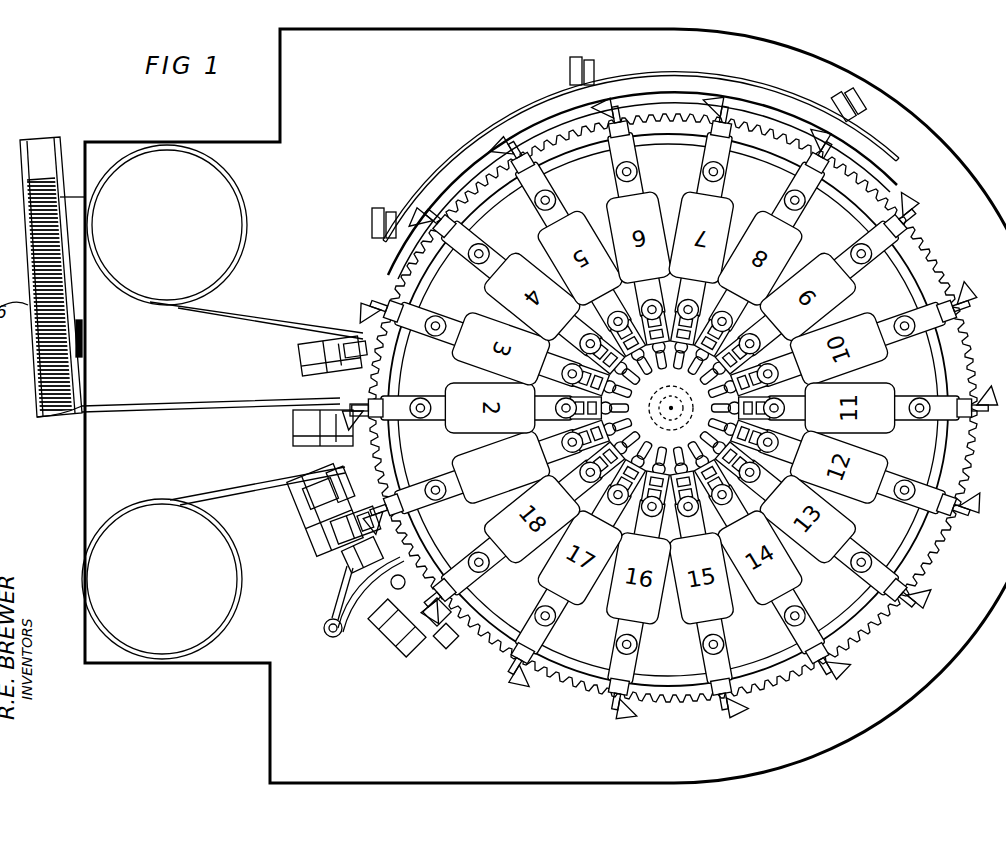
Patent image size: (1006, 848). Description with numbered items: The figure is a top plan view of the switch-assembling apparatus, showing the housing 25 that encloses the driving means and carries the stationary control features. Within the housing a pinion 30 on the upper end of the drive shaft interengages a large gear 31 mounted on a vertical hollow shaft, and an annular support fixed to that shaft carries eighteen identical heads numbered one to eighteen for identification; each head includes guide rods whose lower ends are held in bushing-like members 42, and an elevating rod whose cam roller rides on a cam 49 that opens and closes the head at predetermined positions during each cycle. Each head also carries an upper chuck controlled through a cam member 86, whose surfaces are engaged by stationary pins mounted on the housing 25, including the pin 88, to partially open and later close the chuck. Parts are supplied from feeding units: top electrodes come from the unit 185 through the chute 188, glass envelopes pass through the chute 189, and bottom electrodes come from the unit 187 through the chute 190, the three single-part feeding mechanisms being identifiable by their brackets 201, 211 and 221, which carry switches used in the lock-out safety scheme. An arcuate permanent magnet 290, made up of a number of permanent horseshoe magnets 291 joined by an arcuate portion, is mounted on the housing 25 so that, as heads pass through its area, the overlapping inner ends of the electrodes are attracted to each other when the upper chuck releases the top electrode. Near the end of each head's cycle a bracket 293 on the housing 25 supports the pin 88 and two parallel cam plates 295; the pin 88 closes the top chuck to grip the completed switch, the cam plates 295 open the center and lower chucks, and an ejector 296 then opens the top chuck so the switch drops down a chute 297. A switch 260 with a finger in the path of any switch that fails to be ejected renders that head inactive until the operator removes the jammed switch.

The housing 25 is at (296, 60).
The pinion 30 is at (345, 606).
The large gear 31 is at (447, 638).
The bushing-like members 42 is at (677, 403).
The cam 49 is at (492, 437).
The cam member 86 is at (514, 184).
The stationary pin 88 is at (453, 627).
The feeding unit 185 is at (230, 572).
The feeding unit 187 is at (226, 252).
The chute 188 is at (250, 488).
The chute 189 is at (252, 400).
The chute 190 is at (237, 318).
The bracket 201 is at (300, 512).
The bracket 211 is at (313, 440).
The bracket 221 is at (316, 360).
The switch 260 is at (344, 542).
The permanent magnet 290 is at (440, 163).
The permanent horseshoe magnets 291 is at (378, 210).
The bracket 293 is at (390, 652).
The parallel cam plates 295 is at (433, 645).
The ejector 296 is at (345, 578).
The chute 297 is at (324, 626).